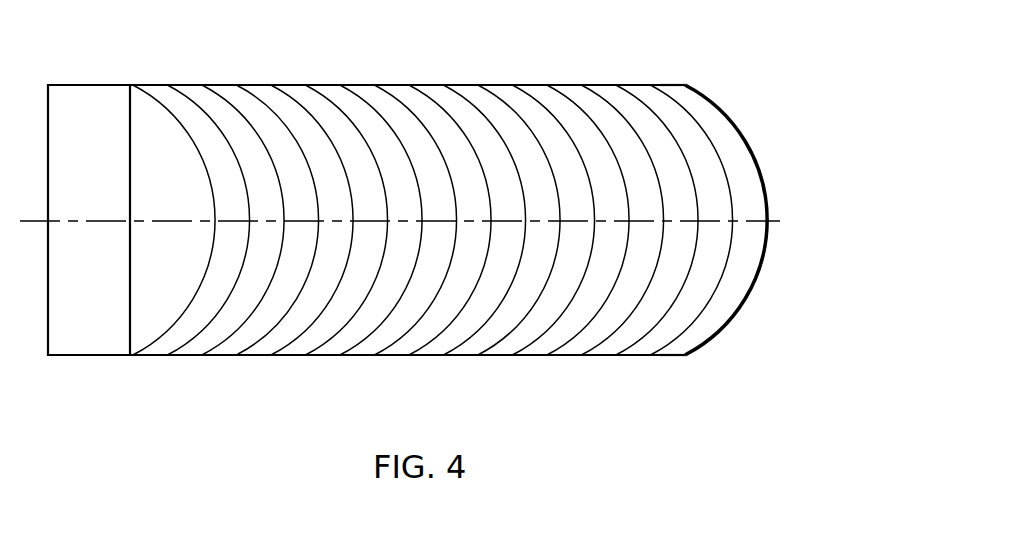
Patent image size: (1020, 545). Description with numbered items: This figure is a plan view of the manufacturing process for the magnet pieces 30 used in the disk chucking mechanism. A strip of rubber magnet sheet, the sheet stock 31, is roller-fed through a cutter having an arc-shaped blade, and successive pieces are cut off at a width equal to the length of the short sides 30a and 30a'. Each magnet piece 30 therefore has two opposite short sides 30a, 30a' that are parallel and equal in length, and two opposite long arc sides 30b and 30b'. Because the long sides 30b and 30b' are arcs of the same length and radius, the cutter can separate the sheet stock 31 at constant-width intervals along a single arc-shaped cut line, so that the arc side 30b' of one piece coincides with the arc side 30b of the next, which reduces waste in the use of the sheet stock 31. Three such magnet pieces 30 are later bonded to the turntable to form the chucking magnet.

The magnet piece 30 is at (717, 316).
The short side 30a is at (689, 407).
The short side 30a' is at (717, 51).
The long arc side 30b is at (788, 220).
The long arc side 30b' is at (748, 209).
The sheet stock 31 is at (83, 113).